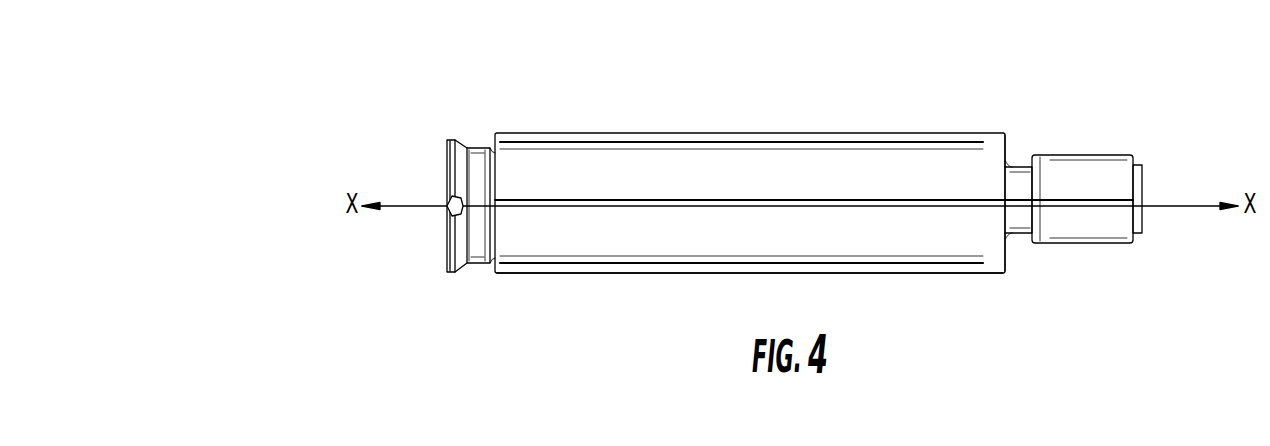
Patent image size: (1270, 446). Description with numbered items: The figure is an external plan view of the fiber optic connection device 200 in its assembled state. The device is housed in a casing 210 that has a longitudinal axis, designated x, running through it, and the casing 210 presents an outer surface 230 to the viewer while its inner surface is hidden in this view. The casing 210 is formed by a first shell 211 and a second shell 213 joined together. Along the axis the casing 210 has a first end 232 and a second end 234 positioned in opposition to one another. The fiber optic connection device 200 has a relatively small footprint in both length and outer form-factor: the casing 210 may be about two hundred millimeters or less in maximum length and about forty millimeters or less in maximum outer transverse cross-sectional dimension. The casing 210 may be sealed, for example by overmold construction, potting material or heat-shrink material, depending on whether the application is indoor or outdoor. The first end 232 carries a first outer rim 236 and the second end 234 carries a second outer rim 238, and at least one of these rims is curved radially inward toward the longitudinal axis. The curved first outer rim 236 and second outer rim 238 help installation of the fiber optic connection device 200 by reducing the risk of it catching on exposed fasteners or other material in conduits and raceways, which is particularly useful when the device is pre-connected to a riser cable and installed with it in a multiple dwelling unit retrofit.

The fiber optic connection device 200 is at (703, 78).
The casing 210 is at (695, 133).
The first shell 211 is at (945, 133).
The second shell 213 is at (622, 273).
The outer surface 230 is at (820, 132).
The first end 232 is at (493, 143).
The second end 234 is at (1128, 155).
The first outer rim 236 is at (495, 143).
The second outer rim 238 is at (1006, 270).